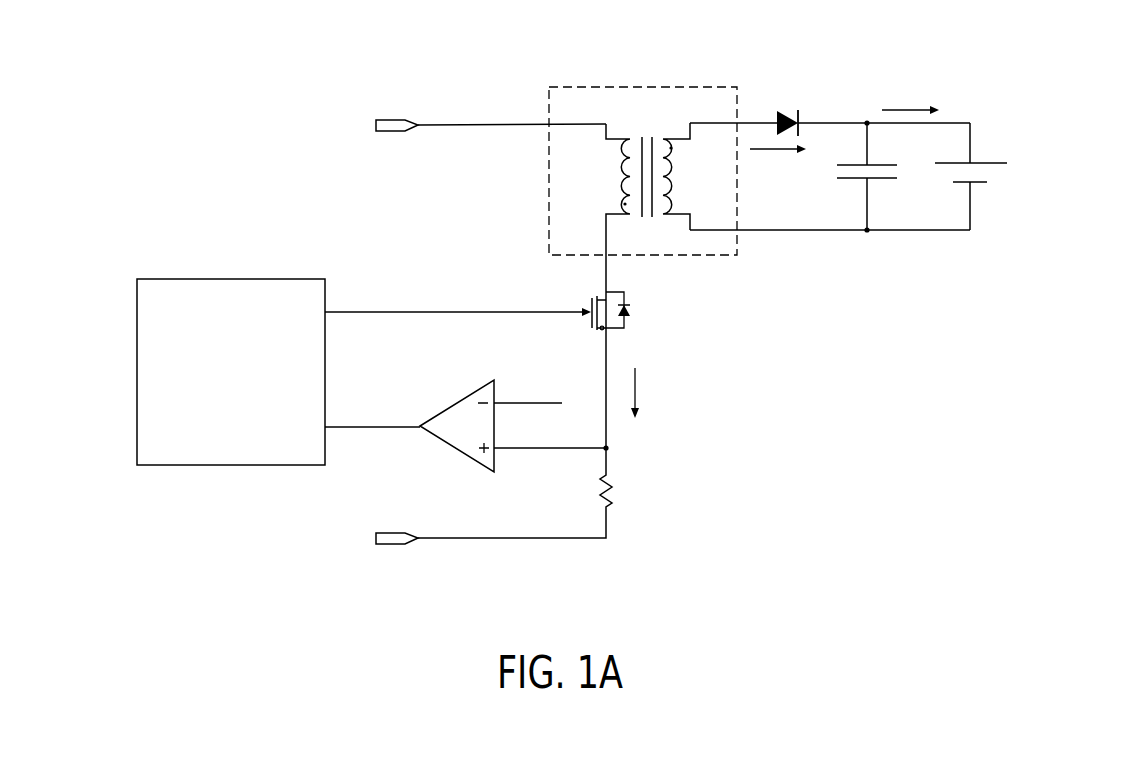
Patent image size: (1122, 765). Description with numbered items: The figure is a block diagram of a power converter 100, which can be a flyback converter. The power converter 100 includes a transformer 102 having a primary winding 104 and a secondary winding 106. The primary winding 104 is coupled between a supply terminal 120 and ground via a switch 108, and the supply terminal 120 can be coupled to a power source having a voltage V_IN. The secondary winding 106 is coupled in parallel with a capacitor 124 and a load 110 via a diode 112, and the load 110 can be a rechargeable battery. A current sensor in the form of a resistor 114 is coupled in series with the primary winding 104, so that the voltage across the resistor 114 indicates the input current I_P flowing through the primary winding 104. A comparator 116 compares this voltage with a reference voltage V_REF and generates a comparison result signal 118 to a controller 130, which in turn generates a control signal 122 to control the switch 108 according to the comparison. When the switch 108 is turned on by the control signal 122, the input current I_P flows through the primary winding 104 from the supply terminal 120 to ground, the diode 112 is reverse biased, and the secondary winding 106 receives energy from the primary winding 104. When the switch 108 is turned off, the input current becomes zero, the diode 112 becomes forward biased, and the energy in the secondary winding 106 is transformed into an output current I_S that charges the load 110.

The power converter 100 is at (165, 127).
The transformer 102 is at (553, 86).
The primary winding 104 is at (628, 138).
The secondary winding 106 is at (665, 138).
The switch 108 is at (591, 300).
The load 110 is at (985, 163).
The diode 112 is at (800, 112).
The resistor 114 is at (618, 484).
The comparator 116 is at (461, 400).
The comparison result signal 118 is at (387, 425).
The supply terminal 120 is at (400, 121).
The control signal 122 is at (492, 311).
The capacitor 124 is at (878, 164).
The controller 130 is at (276, 279).